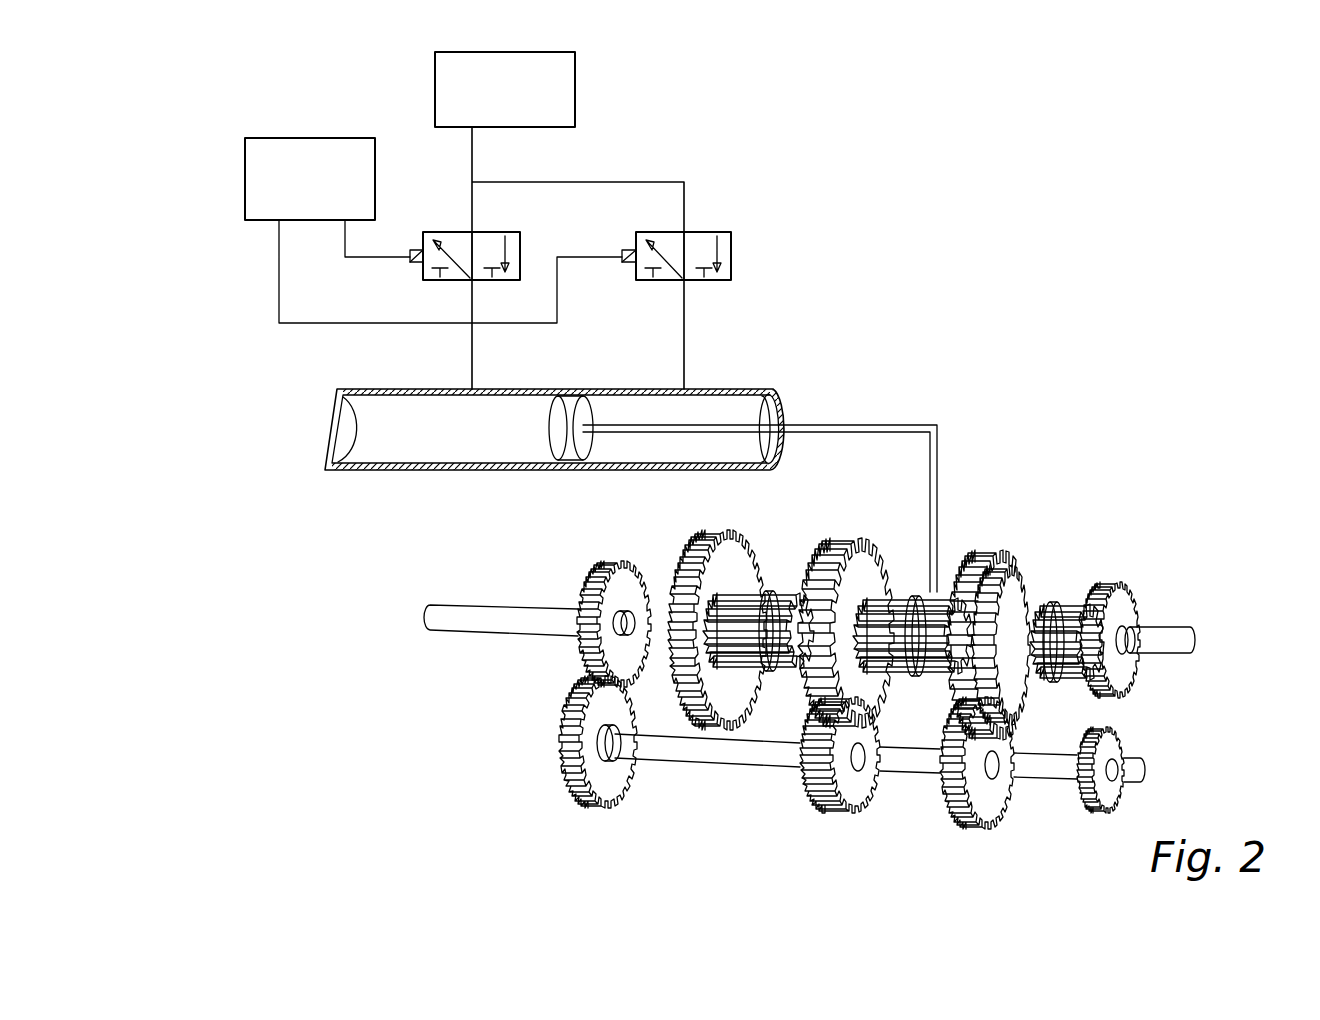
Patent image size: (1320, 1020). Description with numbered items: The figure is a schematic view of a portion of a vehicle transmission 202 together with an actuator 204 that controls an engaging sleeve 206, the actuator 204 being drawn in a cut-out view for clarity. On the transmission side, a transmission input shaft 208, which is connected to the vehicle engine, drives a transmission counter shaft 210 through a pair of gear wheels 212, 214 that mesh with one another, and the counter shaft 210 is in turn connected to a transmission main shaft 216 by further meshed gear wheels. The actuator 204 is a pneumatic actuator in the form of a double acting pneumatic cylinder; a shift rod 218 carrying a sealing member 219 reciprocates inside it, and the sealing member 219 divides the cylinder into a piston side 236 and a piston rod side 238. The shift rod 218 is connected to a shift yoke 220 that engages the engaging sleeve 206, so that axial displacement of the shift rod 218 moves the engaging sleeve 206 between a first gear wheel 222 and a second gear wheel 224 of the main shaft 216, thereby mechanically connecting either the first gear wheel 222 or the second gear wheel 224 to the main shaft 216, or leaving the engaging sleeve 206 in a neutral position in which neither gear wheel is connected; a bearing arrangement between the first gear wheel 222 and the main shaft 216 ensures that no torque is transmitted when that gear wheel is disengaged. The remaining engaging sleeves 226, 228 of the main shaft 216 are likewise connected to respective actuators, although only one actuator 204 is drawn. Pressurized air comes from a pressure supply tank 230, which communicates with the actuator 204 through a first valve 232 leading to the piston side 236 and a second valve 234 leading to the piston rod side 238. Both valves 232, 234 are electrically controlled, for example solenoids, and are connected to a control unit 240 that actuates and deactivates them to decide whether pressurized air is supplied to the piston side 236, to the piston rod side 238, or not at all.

The vehicle transmission 202 is at (1076, 558).
The actuator 204 is at (760, 389).
The engaging sleeve 206 is at (972, 552).
The transmission input shaft 208 is at (468, 620).
The transmission counter shaft 210 is at (660, 750).
The gear wheel 212 is at (597, 568).
The gear wheel 214 is at (600, 785).
The transmission main shaft 216 is at (1185, 637).
The shift rod 218 is at (808, 425).
The sealing member 219 is at (555, 435).
The shift yoke 220 is at (947, 588).
The first gear wheel 222 is at (905, 585).
The second gear wheel 224 is at (880, 560).
The engaging sleeve 226 is at (1135, 622).
The engaging sleeve 228 is at (790, 575).
The pressure supply tank 230 is at (577, 78).
The first valve 232 is at (450, 232).
The second valve 234 is at (720, 232).
The piston side 236 is at (393, 448).
The piston rod side 238 is at (715, 407).
The control unit 240 is at (243, 172).